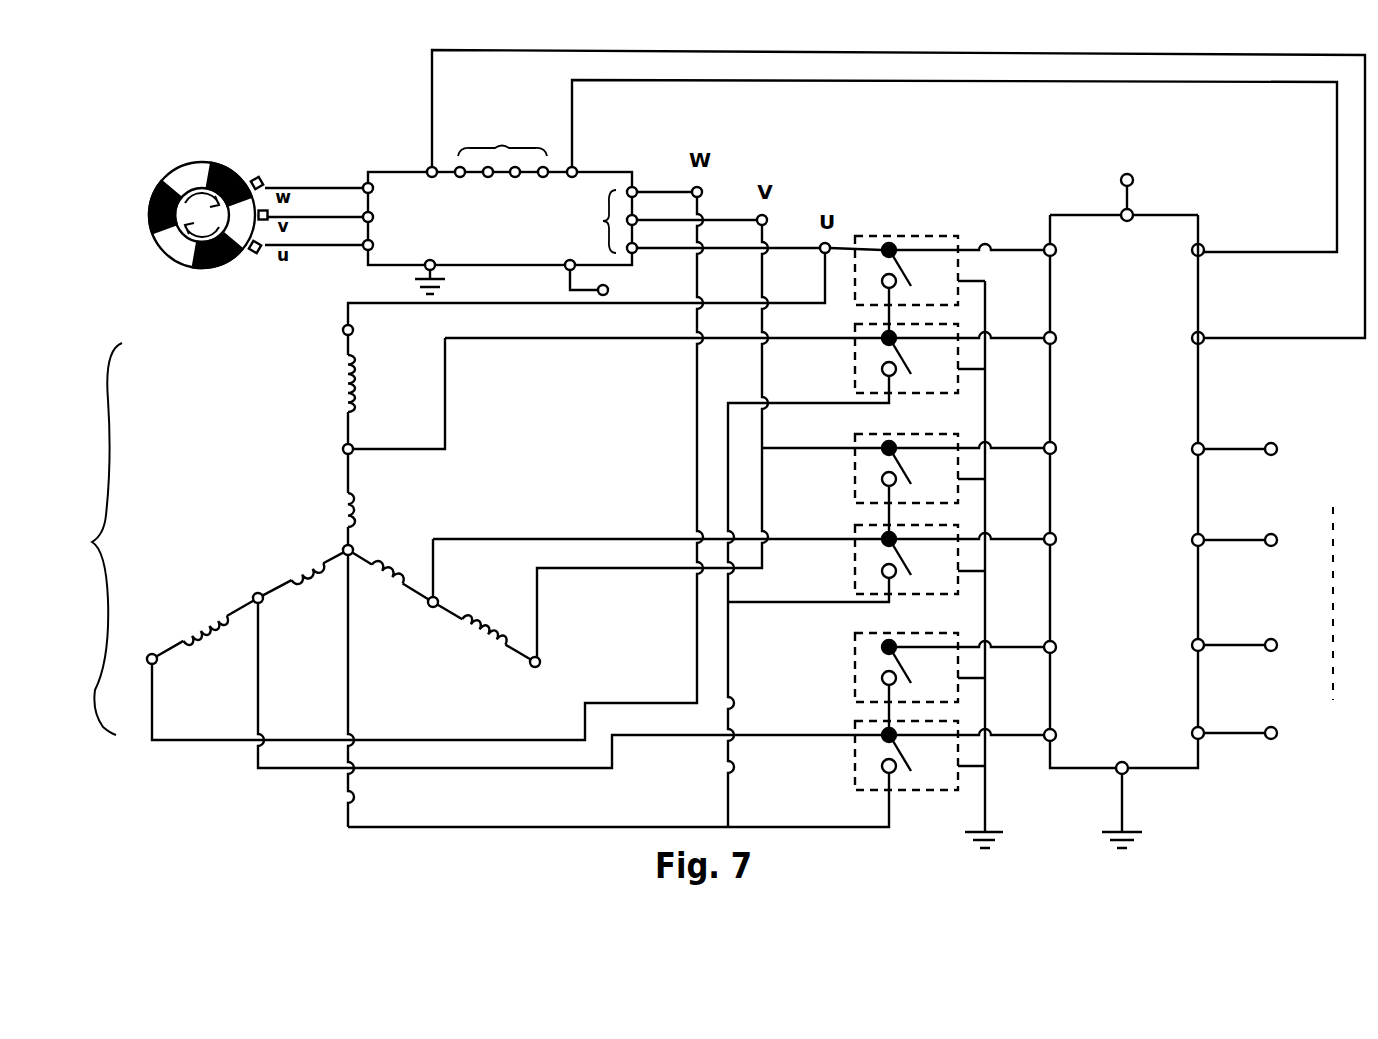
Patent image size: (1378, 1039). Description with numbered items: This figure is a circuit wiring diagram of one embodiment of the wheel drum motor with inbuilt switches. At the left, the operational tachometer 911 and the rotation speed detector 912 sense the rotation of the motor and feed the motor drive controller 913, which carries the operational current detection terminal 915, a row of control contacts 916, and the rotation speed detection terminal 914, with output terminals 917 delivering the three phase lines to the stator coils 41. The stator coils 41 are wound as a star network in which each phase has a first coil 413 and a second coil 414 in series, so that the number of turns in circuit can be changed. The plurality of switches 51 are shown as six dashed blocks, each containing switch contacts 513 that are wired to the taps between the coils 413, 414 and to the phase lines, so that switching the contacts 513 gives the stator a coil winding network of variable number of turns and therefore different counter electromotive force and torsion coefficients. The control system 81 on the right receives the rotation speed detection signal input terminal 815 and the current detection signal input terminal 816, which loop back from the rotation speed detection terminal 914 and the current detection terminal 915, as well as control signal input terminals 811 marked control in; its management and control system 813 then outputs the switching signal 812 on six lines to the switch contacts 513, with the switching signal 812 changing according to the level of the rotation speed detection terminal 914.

The operational tachometer 911 is at (233, 170).
The rotation speed detector 912 is at (270, 180).
The motor drive controller 913 is at (412, 270).
The rotation speed detection terminal 914 is at (578, 168).
The operational current detection terminal 915 is at (427, 169).
The control contacts 916 is at (503, 124).
The output terminals 917 is at (602, 224).
The stator coils 41 is at (89, 539).
The first coils 413 is at (298, 549).
The second coils 414 is at (337, 391).
The switches 51 is at (962, 206).
The switch contacts 513 is at (936, 262).
The control system 81 is at (1043, 146).
The control signal input terminals 811 is at (1203, 448).
The switching signal 812 is at (1057, 250).
The management and control system 813 is at (1167, 240).
The rotation speed detection signal input terminal 815 is at (1205, 249).
The current detection signal input terminal 816 is at (1205, 336).